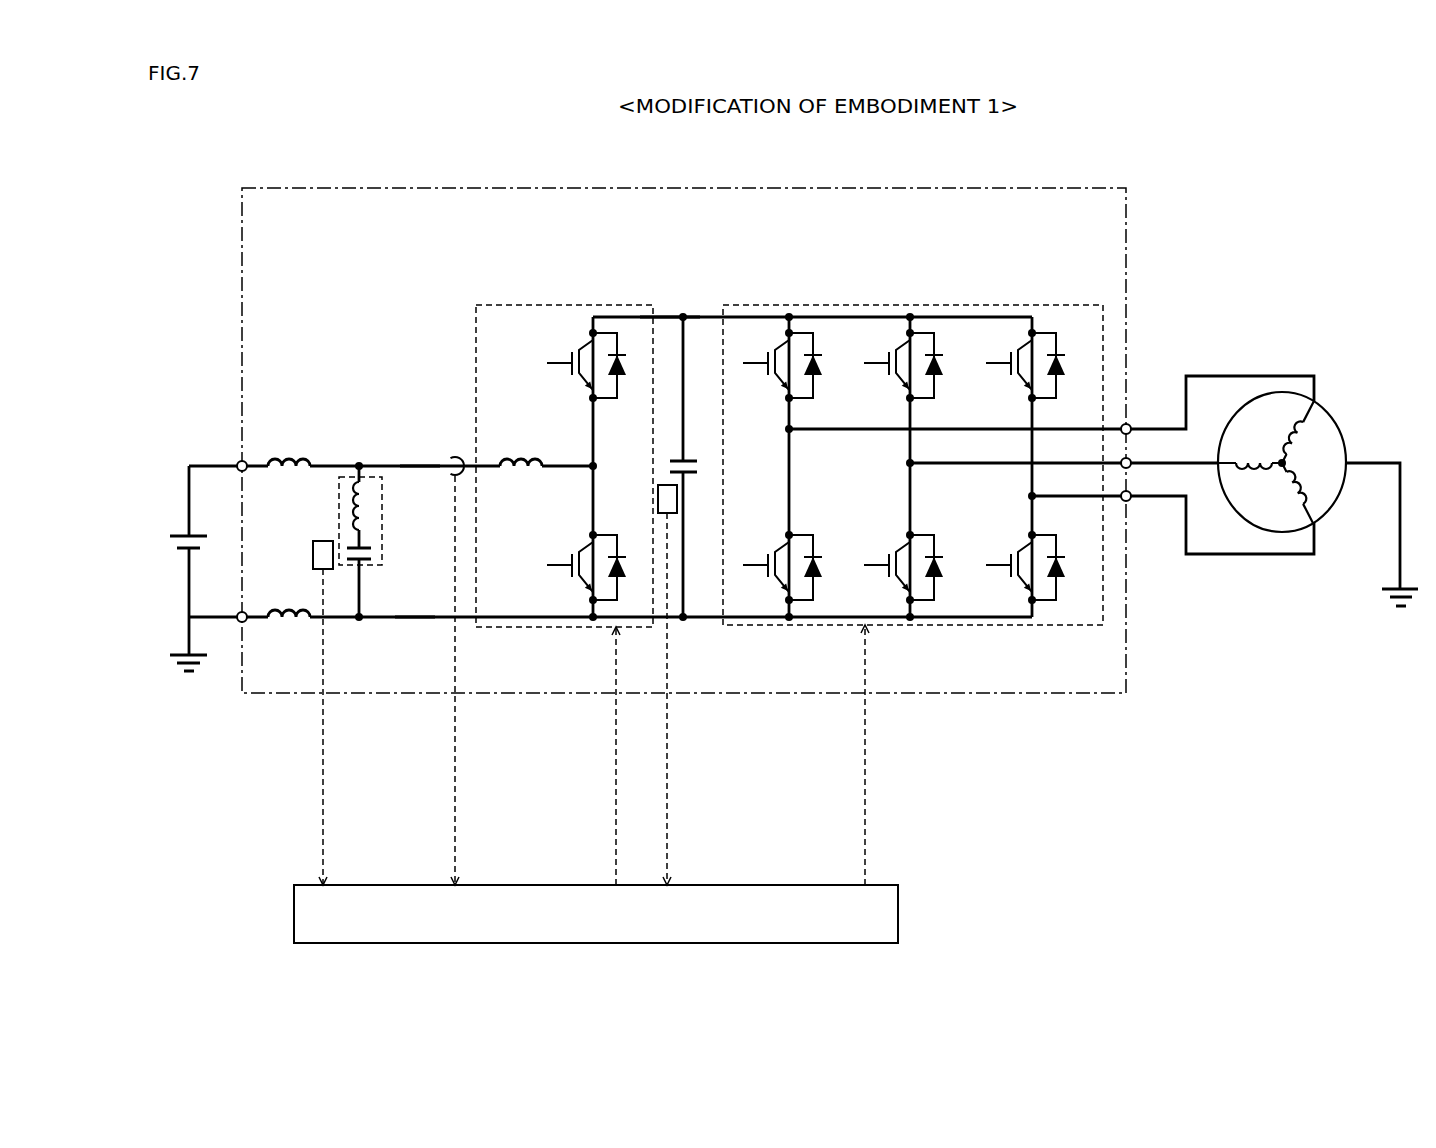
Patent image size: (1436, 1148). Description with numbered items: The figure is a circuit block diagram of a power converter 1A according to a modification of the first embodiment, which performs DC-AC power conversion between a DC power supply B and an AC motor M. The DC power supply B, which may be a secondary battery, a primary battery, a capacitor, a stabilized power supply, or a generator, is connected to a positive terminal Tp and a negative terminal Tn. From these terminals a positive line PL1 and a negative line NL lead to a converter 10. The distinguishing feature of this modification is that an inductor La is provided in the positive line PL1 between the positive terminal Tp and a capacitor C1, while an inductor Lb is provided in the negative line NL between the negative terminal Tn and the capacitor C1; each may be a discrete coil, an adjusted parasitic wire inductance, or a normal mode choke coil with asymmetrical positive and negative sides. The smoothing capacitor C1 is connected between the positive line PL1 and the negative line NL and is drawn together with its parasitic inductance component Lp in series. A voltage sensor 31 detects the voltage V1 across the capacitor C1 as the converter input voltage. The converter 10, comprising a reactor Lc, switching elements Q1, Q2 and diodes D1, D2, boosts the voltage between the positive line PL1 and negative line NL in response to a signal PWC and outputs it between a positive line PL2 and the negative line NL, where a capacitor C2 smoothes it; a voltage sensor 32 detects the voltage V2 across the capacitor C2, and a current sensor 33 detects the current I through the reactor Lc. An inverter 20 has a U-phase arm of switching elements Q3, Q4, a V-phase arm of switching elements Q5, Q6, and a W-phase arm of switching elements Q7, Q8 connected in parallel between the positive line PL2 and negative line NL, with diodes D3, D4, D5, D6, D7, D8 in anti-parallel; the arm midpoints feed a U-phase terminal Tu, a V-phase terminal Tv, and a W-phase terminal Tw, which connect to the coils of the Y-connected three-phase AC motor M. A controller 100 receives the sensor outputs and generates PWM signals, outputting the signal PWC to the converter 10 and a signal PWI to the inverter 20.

The power converter 1A is at (1008, 191).
The converter 10 is at (602, 307).
The inverter 20 is at (1050, 308).
The voltage sensor 31 is at (313, 553).
The voltage sensor 32 is at (667, 484).
The current sensor 33 is at (451, 456).
The controller 100 is at (767, 886).
The DC power supply B is at (183, 535).
The positive terminal Tp is at (239, 462).
The negative terminal Tn is at (239, 613).
The inductor La is at (288, 456).
The inductor Lb is at (289, 626).
The reactor Lc is at (521, 448).
The parasitic inductance component Lp is at (366, 508).
The capacitor C1 is at (371, 563).
The capacitor C2 is at (686, 458).
The positive line PL1 is at (417, 463).
The positive line PL2 is at (667, 315).
The negative line NL is at (414, 614).
The switching element Q1 is at (569, 365).
The switching element Q2 is at (569, 567).
The switching element Q3 is at (765, 365).
The switching element Q4 is at (765, 567).
The switching element Q5 is at (886, 365).
The switching element Q6 is at (886, 567).
The switching element Q7 is at (1008, 365).
The switching element Q8 is at (1008, 567).
The diode D1 is at (619, 368).
The diode D2 is at (619, 570).
The diode D3 is at (816, 370).
The diode D4 is at (816, 571).
The diode D5 is at (937, 370).
The diode D6 is at (937, 571).
The diode D7 is at (1059, 370).
The diode D8 is at (1059, 571).
The U-phase terminal Tu is at (1129, 425).
The V-phase terminal Tv is at (1129, 459).
The W-phase terminal Tw is at (1129, 492).
The AC motor M is at (1330, 412).
The voltage V1 is at (337, 727).
The voltage V2 is at (681, 699).
The current I is at (462, 680).
The signal PWC is at (591, 756).
The signal PWI is at (885, 755).